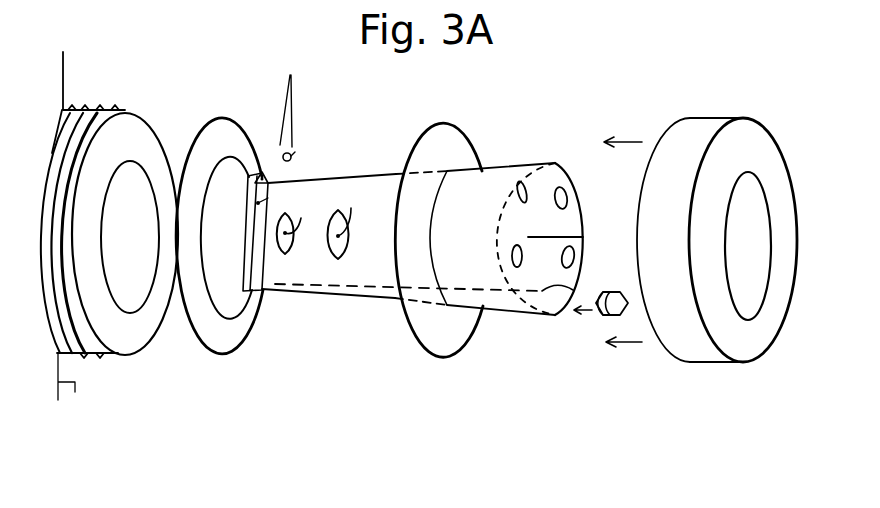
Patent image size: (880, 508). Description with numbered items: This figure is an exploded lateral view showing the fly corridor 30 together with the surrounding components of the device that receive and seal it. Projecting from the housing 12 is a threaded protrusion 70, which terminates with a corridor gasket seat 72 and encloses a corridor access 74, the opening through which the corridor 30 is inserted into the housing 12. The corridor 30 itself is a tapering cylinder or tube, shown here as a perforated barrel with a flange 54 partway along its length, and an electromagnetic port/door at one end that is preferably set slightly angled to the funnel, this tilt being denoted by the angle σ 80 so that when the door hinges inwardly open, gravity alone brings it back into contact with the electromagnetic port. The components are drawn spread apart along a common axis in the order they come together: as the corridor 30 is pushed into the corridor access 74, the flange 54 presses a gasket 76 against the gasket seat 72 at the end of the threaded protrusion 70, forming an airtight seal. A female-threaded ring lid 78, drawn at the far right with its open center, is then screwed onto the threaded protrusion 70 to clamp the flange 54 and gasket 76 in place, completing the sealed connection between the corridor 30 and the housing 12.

The housing 12 is at (88, 234).
The corridor 30 is at (577, 437).
The flange 54 is at (445, 342).
The threaded protrusion 70 is at (98, 355).
The corridor gasket seat 72 is at (132, 333).
The corridor access 74 is at (140, 255).
The gasket 76 is at (220, 335).
The female-threaded ring lid 78 is at (697, 348).
The angle σ 80 is at (303, 148).